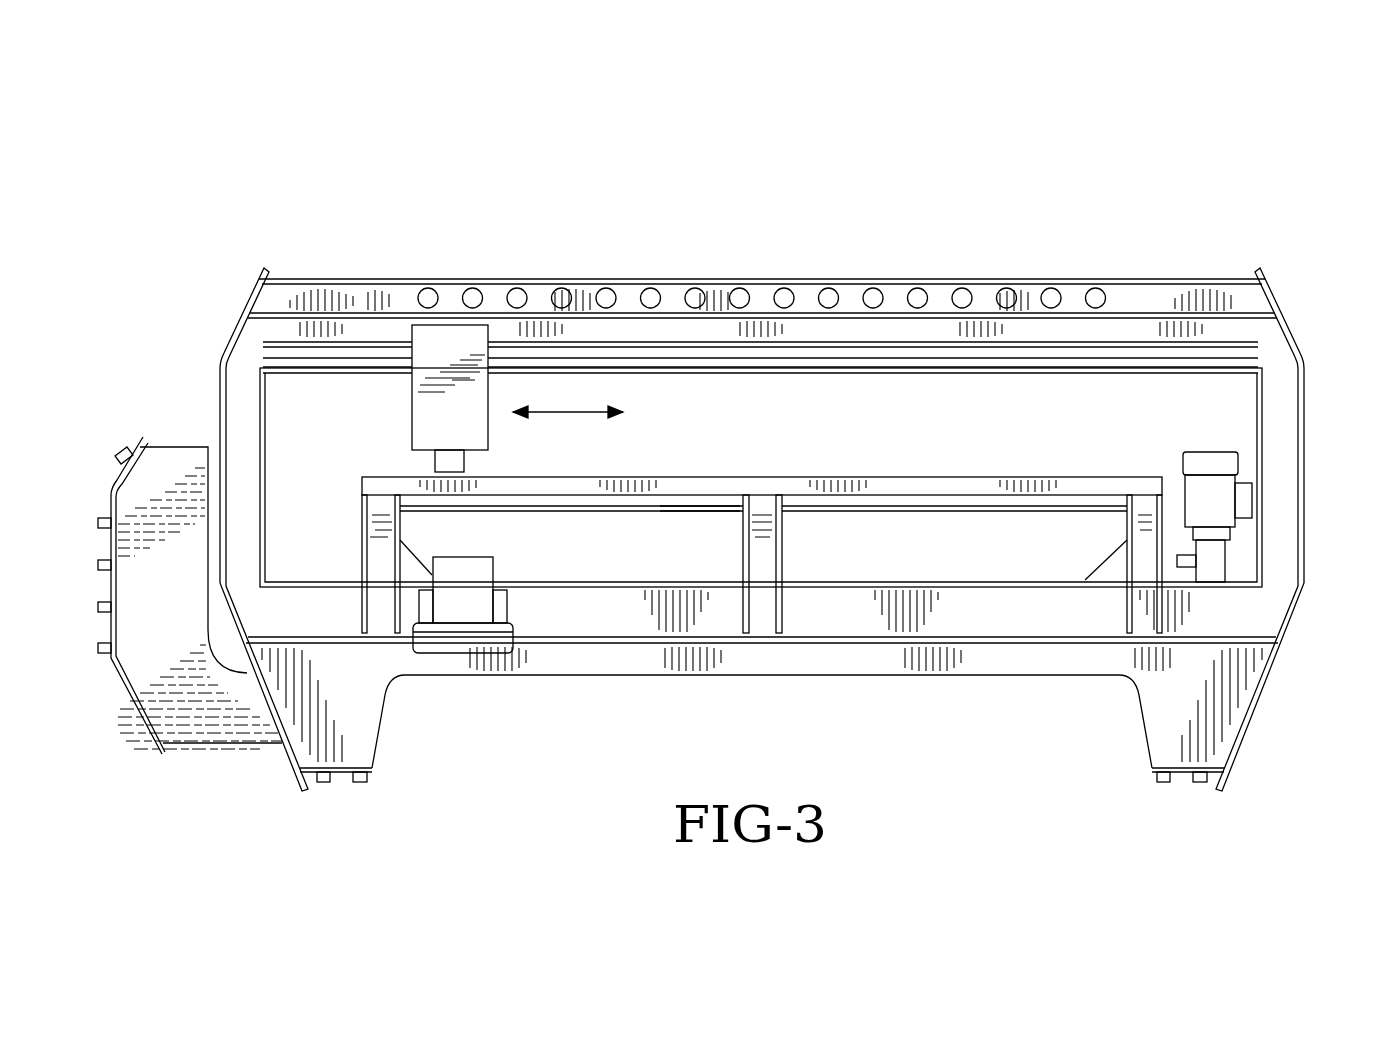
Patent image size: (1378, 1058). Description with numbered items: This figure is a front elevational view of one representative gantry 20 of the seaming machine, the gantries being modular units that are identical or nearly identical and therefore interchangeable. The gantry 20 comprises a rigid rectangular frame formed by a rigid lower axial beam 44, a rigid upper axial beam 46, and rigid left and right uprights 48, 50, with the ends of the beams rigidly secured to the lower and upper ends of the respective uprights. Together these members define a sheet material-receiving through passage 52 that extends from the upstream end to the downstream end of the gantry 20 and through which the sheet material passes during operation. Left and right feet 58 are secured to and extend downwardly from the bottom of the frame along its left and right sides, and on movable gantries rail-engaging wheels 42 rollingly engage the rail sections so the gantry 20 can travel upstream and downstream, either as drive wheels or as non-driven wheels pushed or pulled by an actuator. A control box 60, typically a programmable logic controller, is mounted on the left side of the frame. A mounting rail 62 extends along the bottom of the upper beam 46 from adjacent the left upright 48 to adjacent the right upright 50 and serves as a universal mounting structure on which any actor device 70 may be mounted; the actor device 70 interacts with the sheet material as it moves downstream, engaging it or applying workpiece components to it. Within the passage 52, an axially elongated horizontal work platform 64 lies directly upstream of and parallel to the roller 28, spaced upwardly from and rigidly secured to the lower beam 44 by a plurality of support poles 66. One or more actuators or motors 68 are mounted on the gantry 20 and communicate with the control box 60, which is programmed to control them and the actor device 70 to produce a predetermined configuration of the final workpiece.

The gantry 20 is at (1122, 204).
The roller 28 is at (687, 512).
The rail-engaging wheels 42 is at (325, 784).
The lower axial beam 44 is at (603, 602).
The upper axial beam 46 is at (672, 290).
The left upright 48 is at (222, 400).
The right upright 50 is at (1282, 407).
The sheet material-receiving through passage 52 is at (762, 312).
The feet 58 is at (372, 723).
The control box 60 is at (213, 725).
The mounting rail 62 is at (707, 360).
The work platform 64 is at (958, 483).
The support poles 66 is at (400, 530).
The actuators or motors 68 is at (472, 565).
The actor device 70 is at (422, 430).